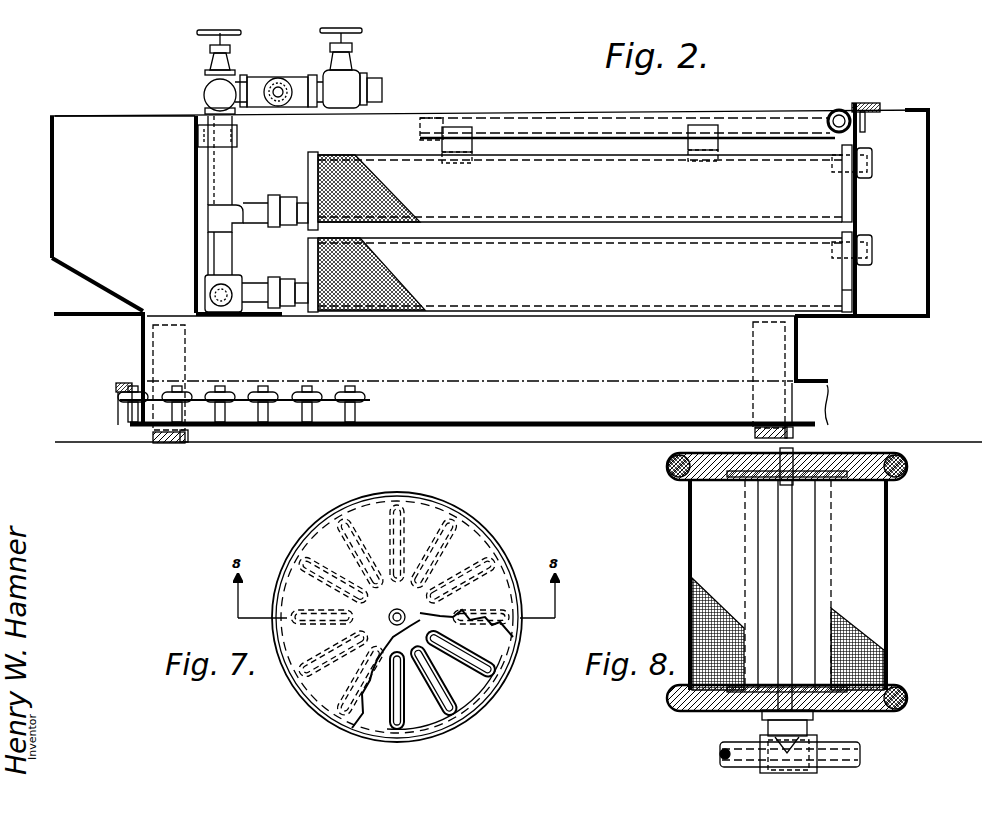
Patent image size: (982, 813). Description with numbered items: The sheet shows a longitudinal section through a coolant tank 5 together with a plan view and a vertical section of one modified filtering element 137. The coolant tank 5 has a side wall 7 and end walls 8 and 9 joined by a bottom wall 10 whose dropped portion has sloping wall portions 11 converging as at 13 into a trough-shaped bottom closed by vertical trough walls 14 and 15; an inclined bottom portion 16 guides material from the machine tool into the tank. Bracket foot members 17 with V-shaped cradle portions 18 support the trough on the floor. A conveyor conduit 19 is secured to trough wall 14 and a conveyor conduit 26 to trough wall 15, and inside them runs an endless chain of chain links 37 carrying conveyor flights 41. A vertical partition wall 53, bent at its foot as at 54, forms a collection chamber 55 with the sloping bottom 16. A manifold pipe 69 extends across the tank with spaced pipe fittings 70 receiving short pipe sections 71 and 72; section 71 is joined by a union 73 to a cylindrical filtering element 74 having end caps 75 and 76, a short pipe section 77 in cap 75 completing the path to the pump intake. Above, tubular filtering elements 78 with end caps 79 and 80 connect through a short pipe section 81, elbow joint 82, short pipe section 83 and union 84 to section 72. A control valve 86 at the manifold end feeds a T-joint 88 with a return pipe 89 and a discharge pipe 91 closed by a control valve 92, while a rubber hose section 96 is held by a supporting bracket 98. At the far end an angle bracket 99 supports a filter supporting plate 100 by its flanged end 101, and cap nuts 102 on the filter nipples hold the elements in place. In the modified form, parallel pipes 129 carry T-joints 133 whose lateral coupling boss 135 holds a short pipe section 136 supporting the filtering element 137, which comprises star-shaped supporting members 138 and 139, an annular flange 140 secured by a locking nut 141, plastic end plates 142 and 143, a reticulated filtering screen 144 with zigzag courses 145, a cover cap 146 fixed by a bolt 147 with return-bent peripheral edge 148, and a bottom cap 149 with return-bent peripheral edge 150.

In FIG. 2, the coolant tank 5 is at (934, 250).
In FIG. 2, the side wall 7 is at (900, 114).
In FIG. 2, the end wall 8 is at (50, 197).
In FIG. 2, the end wall 9 is at (931, 179).
In FIG. 2, the bottom wall 10 is at (853, 318).
In FIG. 2, the sloping wall portions 11 is at (471, 373).
In FIG. 2, the trough-shaped bottom 13 is at (556, 424).
In FIG. 2, the vertical trough wall 14 is at (141, 346).
In FIG. 2, the vertical trough wall 15 is at (799, 354).
In FIG. 2, the inclined bottom wall portion 16 is at (98, 313).
In FIG. 2, the bracket foot member 17 is at (150, 440).
In FIG. 2, the V-shaped cradle portion 18 is at (189, 442).
In FIG. 2, the conveyor conduit 19 is at (118, 383).
In FIG. 2, the conveyor conduit 26 is at (808, 383).
In FIG. 2, the chain links 37 is at (240, 392).
In FIG. 2, the conveyor flights 41 is at (258, 416).
In FIG. 2, the vertical partition wall 53 is at (194, 165).
In FIG. 2, the angularly bent lower end 54 is at (211, 316).
In FIG. 2, the collection chamber 55 is at (100, 130).
In FIG. 2, the manifold pipe 69 is at (210, 295).
In FIG. 2, the pipe fittings 70 is at (238, 278).
In FIG. 2, the short pipe section 71 is at (255, 285).
In FIG. 2, the short pipe section 72 is at (208, 254).
In FIG. 2, the pipe coupling or union 73 is at (286, 310).
In FIG. 2, the cylindrical filtering element 74 is at (385, 313).
In FIG. 2, the end cap 75 is at (308, 259).
In FIG. 2, the end cap 76 is at (852, 292).
In FIG. 2, the short pipe section 77 is at (305, 308).
In FIG. 2, the tubular filtering elements 78 is at (377, 155).
In FIG. 2, the end cap 79 is at (311, 152).
In FIG. 2, the end cap 80 is at (852, 190).
In FIG. 2, the short pipe section 81 is at (303, 203).
In FIG. 2, the elbow joint 82 is at (208, 218).
In FIG. 2, the short pipe section 83 is at (255, 203).
In FIG. 2, the pipe coupling or union 84 is at (280, 195).
In FIG. 2, the control valve 86 is at (207, 92).
In FIG. 2, the T-joint 88 is at (262, 78).
In FIG. 2, the return pipe 89 is at (280, 78).
In FIG. 2, the discharge pipe 91 is at (374, 78).
In FIG. 2, the control valve 92 is at (333, 62).
In FIG. 2, the rubber hose section 96 is at (762, 118).
In FIG. 2, the supporting bracket 98 is at (456, 127).
In FIG. 2, the angle bracket 99 is at (866, 120).
In FIG. 2, the filter supporting plate 100 is at (858, 210).
In FIG. 2, the flanged upper end 101 is at (860, 103).
In FIG. 2, the cap nuts 102 is at (872, 162).
In FIG. 8, the parallel pipes 129 is at (735, 746).
In FIG. 8, the T-joints 133 is at (762, 771).
In FIG. 8, the lateral coupling boss 135 is at (808, 733).
In FIG. 8, the short pipe section 136 is at (762, 716).
In FIG. 8, the filtering element 137 is at (890, 578).
In FIG. 8, the star-shaped supporting member 138 is at (836, 480).
In FIG. 7, the star-shaped supporting member 139 is at (418, 638).
In FIG. 8, the star-shaped supporting member 139 is at (808, 688).
In FIG. 8, the annular flange 140 is at (767, 688).
In FIG. 8, the locking nut 141 is at (810, 714).
In FIG. 8, the plastic end plate 142 is at (906, 466).
In FIG. 7, the plastic end plate 143 is at (412, 690).
In FIG. 8, the plastic end plate 143 is at (688, 702).
In FIG. 7, the reticulated filtering screen 144 is at (473, 651).
In FIG. 8, the reticulated filtering screen 144 is at (689, 561).
In FIG. 7, the zigzag courses 145 is at (444, 680).
In FIG. 7, the cover cap 146 is at (472, 540).
In FIG. 8, the cover cap 146 is at (857, 460).
In FIG. 7, the bolt 147 is at (400, 611).
In FIG. 8, the bolt 147 is at (788, 484).
In FIG. 7, the peripheral edge 148 is at (487, 559).
In FIG. 8, the peripheral edge 148 is at (668, 468).
In FIG. 8, the bottom cap 149 is at (695, 710).
In FIG. 7, the peripheral edge 150 is at (477, 708).
In FIG. 8, the peripheral edge 150 is at (906, 699).